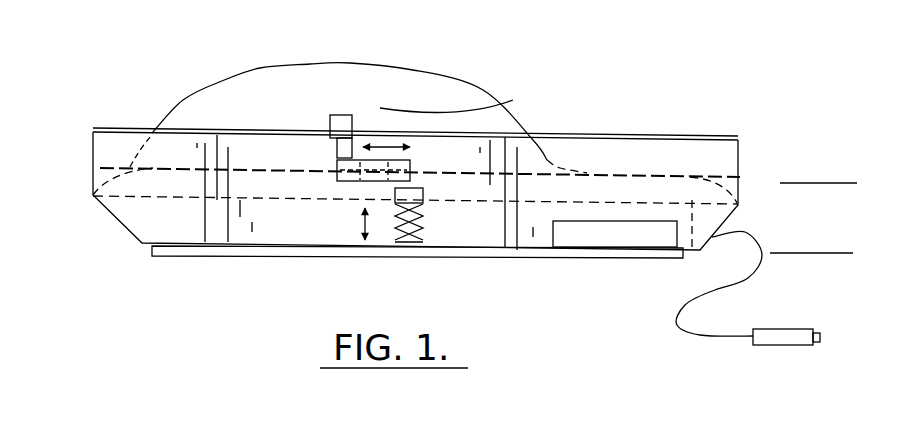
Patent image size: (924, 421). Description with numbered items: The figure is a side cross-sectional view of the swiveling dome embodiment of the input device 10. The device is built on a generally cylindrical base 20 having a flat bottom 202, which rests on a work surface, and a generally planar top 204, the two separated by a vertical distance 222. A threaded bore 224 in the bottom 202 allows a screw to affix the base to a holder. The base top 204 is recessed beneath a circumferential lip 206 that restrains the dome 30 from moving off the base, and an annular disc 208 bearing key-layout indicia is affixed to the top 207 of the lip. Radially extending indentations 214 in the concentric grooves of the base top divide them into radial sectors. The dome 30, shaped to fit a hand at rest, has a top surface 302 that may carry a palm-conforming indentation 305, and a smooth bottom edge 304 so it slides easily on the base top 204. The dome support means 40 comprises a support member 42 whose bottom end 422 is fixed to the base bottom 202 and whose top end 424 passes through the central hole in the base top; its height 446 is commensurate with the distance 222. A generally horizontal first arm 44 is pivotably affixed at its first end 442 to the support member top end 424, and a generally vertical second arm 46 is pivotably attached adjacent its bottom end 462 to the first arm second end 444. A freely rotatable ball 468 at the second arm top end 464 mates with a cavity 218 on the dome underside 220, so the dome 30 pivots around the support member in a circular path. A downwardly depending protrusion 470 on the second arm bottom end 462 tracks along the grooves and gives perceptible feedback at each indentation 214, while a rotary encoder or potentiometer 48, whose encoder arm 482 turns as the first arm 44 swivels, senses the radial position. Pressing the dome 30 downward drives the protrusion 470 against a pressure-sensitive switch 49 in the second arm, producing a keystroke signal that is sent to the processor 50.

The input device 10 is at (86, 78).
The base 20 is at (80, 153).
The dome 30 is at (478, 103).
The dome support means 40 is at (336, 122).
The support member 42 is at (441, 220).
The first arm 44 is at (384, 185).
The second arm 46 is at (336, 141).
The rotary encoder or potentiometer 48 is at (423, 214).
The pressure-sensitive switch 49 is at (330, 137).
The processor 50 is at (660, 236).
The base bottom 202 is at (173, 258).
The base top 204 is at (420, 165).
The circumferential lip 206 is at (90, 136).
The top of the lip 207 is at (740, 137).
The annular disc 208 is at (707, 136).
The radially extending indentations 214 is at (359, 192).
The cavity 218 is at (347, 120).
The dome underside 220 is at (183, 156).
The vertical distance 222 is at (842, 183).
The threaded bore 224 is at (410, 260).
The dome top surface 302 is at (507, 112).
The dome bottom edge 304 is at (587, 170).
The indentation 305 is at (445, 92).
The support member bottom end 422 is at (404, 246).
The support member top end 424 is at (420, 170).
The first arm first end 442 is at (420, 172).
The first arm second end 444 is at (349, 188).
The support member height 446 is at (787, 183).
The second arm bottom end 462 is at (342, 183).
The second arm top end 464 is at (358, 128).
The freely rotatable ball 468 is at (345, 125).
The protrusion 470 is at (330, 181).
The absolute rotary encoder arm 482 is at (425, 178).